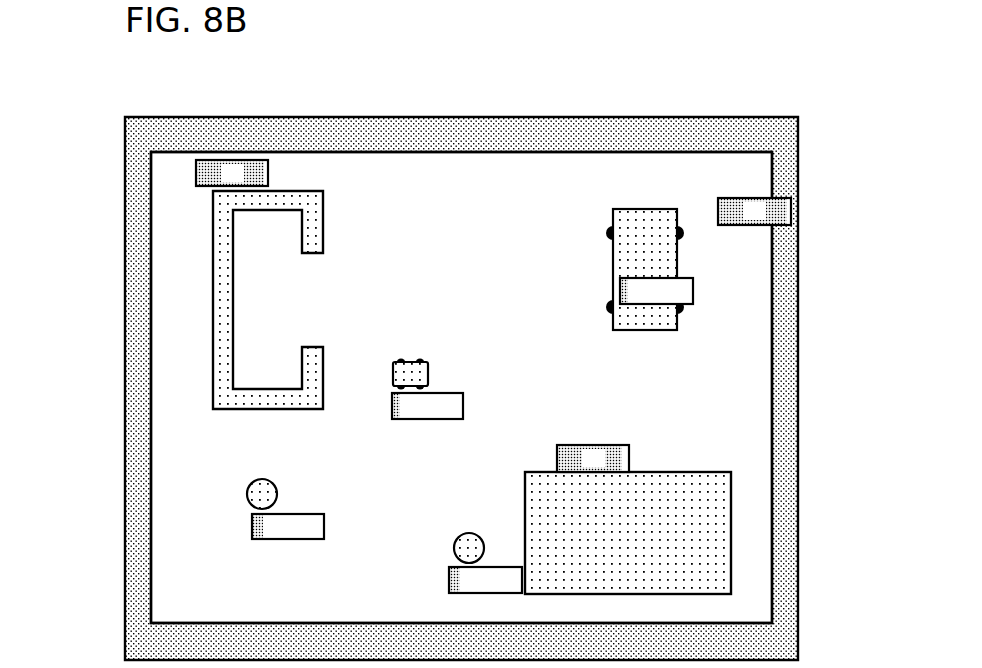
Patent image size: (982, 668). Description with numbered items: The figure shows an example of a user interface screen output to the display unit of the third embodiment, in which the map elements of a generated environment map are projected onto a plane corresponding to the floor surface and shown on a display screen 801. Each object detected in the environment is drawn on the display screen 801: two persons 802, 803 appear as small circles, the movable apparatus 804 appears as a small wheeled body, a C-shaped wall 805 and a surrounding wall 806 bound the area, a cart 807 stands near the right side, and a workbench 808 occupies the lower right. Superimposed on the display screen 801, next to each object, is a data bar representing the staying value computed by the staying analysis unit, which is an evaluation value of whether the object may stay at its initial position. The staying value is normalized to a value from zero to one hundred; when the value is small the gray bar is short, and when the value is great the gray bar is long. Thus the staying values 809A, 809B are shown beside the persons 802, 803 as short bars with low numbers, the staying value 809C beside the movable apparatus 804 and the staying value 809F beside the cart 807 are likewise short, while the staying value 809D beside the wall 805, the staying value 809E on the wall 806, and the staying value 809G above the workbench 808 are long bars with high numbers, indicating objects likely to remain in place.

The display screen 801 is at (125, 152).
The wall 806 is at (656, 152).
The wall 805 is at (213, 232).
The movable apparatus 804 is at (393, 371).
The cart 807 is at (613, 258).
The workbench 808 is at (525, 498).
The person 802 is at (247, 496).
The person 803 is at (453, 548).
The staying value 809A is at (252, 525).
The staying value 809B is at (449, 580).
The staying value 809C is at (392, 407).
The staying value 809D is at (232, 160).
The staying value 809E is at (791, 211).
The staying value 809F is at (620, 292).
The staying value 809G is at (597, 445).